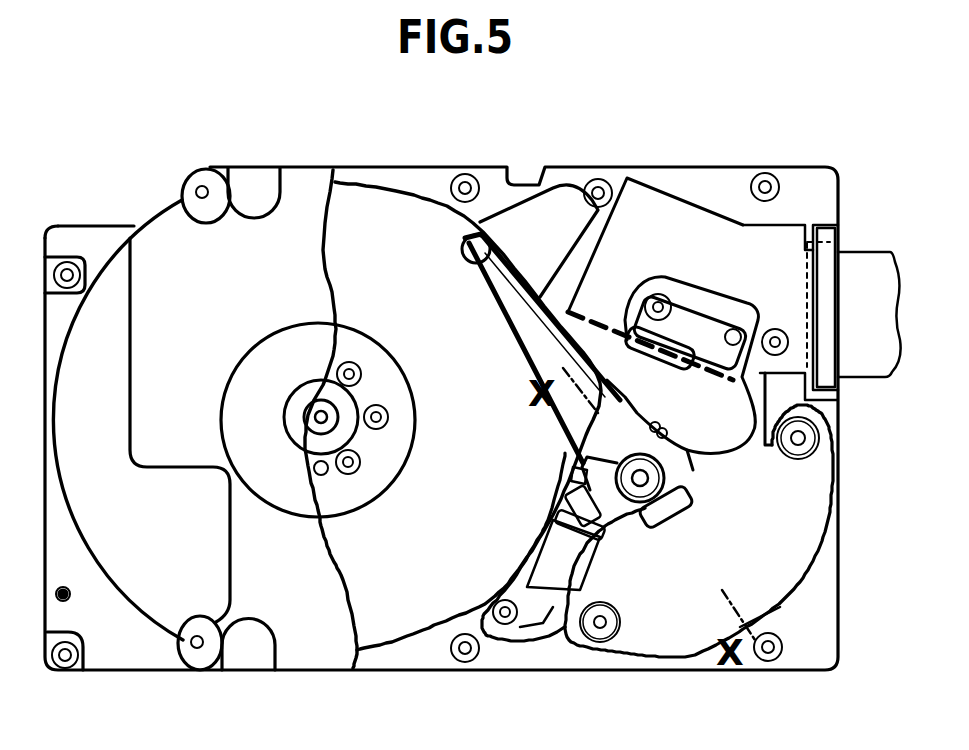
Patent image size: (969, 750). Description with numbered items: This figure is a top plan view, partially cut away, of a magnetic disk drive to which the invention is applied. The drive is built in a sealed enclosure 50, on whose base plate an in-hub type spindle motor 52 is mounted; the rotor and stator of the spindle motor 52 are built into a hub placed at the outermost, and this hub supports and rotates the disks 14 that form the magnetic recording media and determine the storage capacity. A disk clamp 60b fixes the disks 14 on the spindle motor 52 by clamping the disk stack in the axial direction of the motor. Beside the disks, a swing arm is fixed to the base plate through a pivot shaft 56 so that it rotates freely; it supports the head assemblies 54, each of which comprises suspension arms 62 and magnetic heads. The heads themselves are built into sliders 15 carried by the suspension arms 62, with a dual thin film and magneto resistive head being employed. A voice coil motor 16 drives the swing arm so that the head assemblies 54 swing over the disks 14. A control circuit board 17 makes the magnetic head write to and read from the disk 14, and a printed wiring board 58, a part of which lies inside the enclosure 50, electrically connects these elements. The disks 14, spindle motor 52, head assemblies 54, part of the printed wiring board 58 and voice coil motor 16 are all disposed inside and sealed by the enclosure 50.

The disk 14 is at (372, 200).
The slider 15 is at (463, 246).
The voice coil motor 16 is at (645, 656).
The control circuit board 17 is at (578, 311).
The sealed enclosure 50 is at (430, 176).
The spindle motor 52 is at (318, 448).
The head assembly 54 is at (520, 350).
The pivot shaft 56 is at (648, 478).
The printed wiring board 58 is at (747, 393).
The disk clamp 60b is at (352, 482).
The suspension arm 62 is at (557, 407).